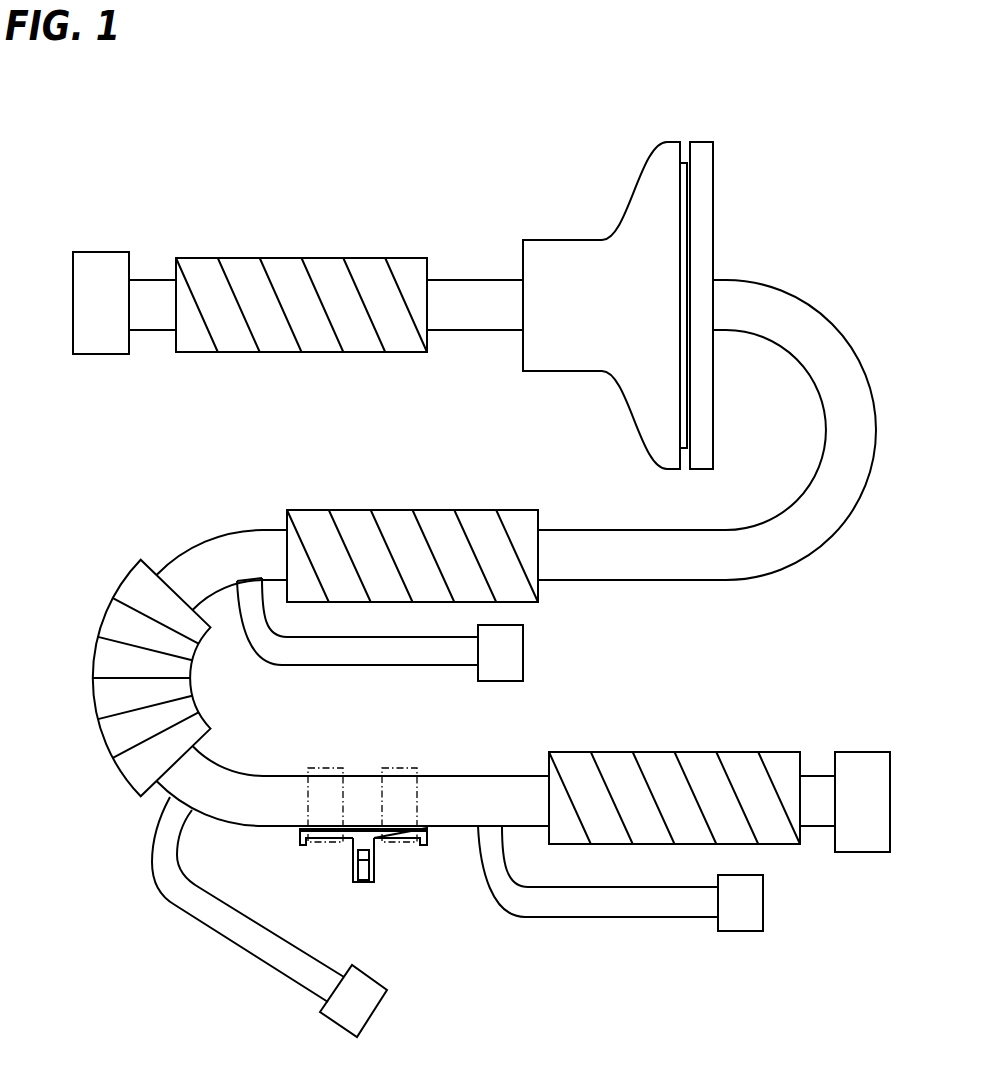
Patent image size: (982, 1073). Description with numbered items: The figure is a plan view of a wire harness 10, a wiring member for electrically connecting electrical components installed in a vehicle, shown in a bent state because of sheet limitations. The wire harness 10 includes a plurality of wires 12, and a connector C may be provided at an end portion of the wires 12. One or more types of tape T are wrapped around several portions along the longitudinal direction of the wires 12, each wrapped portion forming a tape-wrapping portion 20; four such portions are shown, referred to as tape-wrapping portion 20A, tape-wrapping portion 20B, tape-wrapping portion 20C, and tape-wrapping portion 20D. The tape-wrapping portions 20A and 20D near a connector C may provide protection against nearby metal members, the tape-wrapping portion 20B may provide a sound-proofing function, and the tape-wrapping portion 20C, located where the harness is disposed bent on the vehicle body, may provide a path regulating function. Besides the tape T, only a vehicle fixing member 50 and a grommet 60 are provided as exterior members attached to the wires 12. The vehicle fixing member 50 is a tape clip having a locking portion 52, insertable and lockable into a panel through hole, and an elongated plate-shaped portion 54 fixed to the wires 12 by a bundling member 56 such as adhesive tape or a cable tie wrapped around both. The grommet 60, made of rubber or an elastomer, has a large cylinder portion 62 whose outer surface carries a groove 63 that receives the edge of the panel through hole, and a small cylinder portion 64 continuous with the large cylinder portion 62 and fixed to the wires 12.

The wire harness 10 is at (165, 97).
The wire 12 is at (153, 287).
The tape-wrapping portion 20 is at (409, 524).
The tape-wrapping portion 20A is at (290, 257).
The tape-wrapping portion 20B is at (392, 509).
The tape-wrapping portion 20C is at (130, 770).
The tape-wrapping portion 20D is at (700, 752).
The vehicle fixing member 50 is at (371, 893).
The locking portion 52 is at (374, 880).
The plate-shaped portion 54 is at (405, 836).
The bundling member 56 is at (382, 768).
The grommet 60 is at (618, 283).
The large cylinder portion 62 is at (633, 215).
The groove 63 is at (681, 152).
The small cylinder portion 64 is at (564, 252).
The connector C is at (102, 346).
The tape T is at (278, 346).